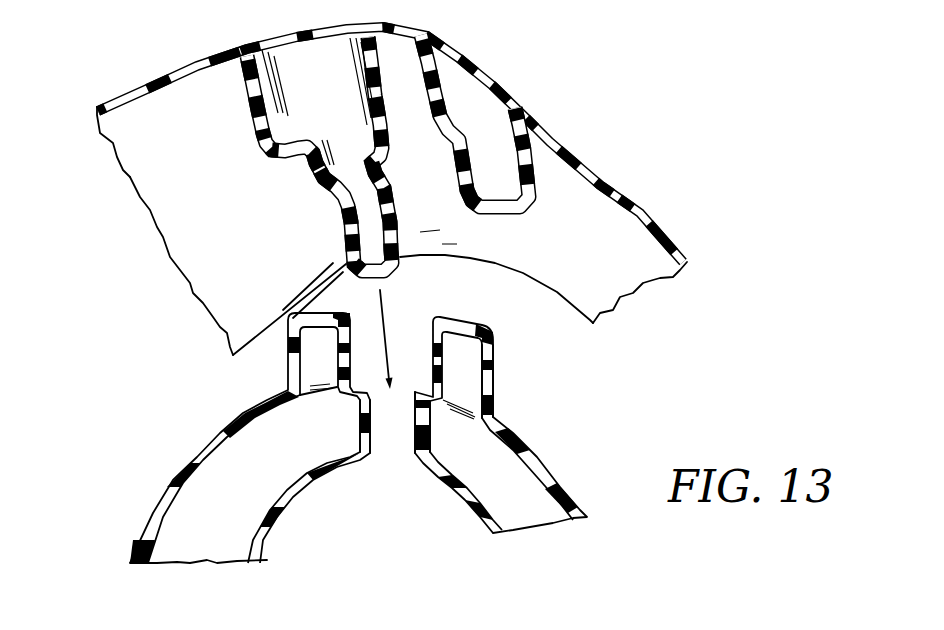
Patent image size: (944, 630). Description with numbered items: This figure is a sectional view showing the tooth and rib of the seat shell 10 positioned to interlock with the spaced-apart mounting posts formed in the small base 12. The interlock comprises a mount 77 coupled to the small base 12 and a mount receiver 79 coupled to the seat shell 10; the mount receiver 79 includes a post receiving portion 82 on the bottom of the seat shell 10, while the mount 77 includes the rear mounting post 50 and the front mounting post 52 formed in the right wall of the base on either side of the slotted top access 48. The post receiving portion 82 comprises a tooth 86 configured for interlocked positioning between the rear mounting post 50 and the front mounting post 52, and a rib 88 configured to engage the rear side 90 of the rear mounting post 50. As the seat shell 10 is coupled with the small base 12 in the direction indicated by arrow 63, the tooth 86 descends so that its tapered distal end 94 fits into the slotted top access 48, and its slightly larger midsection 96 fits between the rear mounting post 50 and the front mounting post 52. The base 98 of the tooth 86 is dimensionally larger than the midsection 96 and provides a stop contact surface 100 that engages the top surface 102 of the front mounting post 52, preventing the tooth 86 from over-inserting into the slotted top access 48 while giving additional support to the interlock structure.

The seat shell 10 is at (150, 83).
The small base 12 is at (177, 470).
The slotted top access 48 is at (385, 443).
The rear mounting post 50 is at (463, 391).
The front mounting post 52 is at (313, 362).
The arrow 63 is at (400, 304).
The mount 77 is at (212, 344).
The mount receiver 79 is at (110, 184).
The post receiving portion 82 is at (95, 156).
The tooth 86 is at (295, 96).
The rib 88 is at (497, 163).
The rear side 90 is at (493, 360).
The tapered distal end 94 is at (413, 213).
The midsection 96 is at (404, 96).
The base 98 is at (386, 59).
The stop contact surface 100 is at (287, 157).
The top surface 102 is at (323, 313).